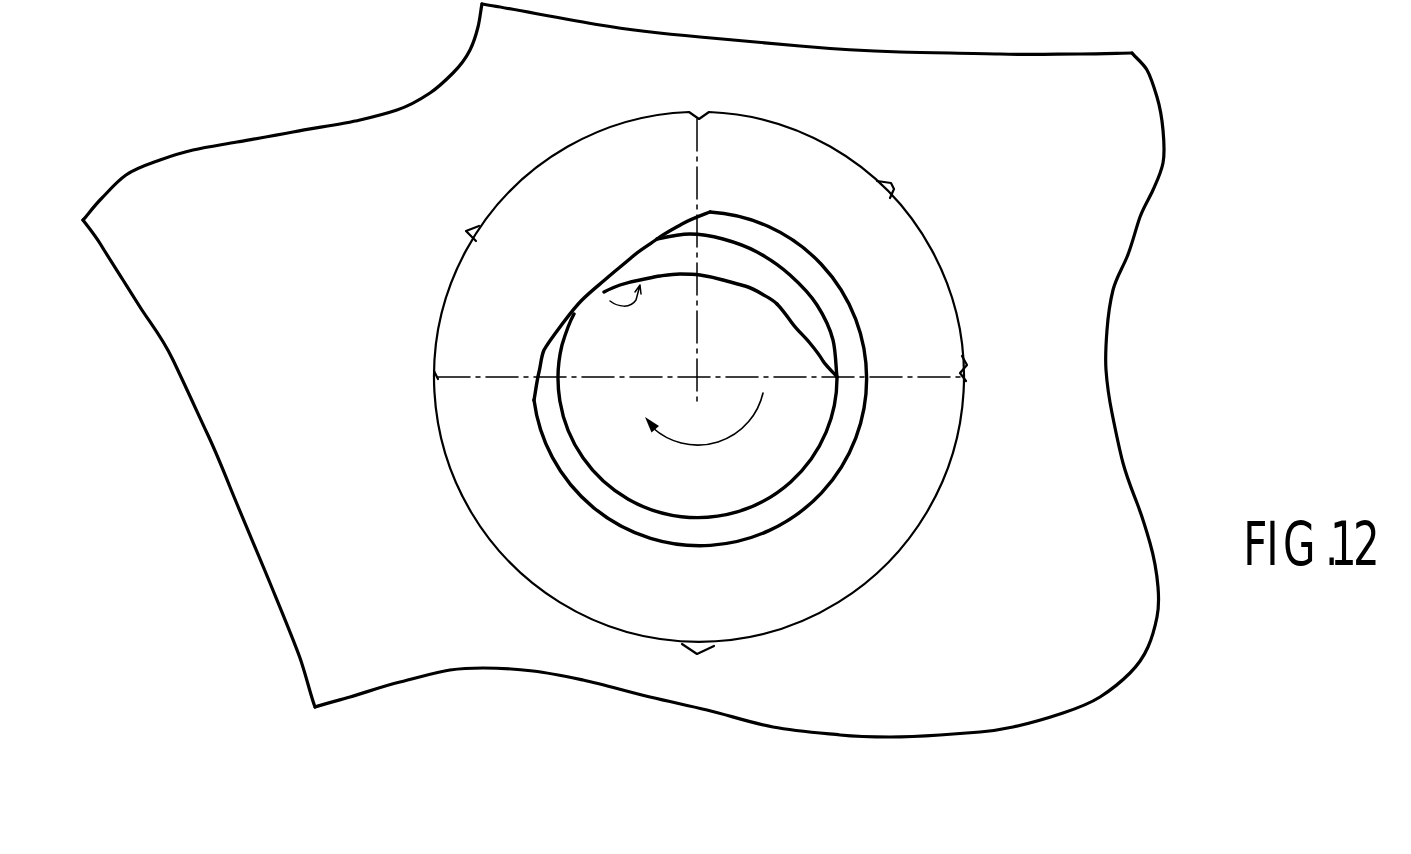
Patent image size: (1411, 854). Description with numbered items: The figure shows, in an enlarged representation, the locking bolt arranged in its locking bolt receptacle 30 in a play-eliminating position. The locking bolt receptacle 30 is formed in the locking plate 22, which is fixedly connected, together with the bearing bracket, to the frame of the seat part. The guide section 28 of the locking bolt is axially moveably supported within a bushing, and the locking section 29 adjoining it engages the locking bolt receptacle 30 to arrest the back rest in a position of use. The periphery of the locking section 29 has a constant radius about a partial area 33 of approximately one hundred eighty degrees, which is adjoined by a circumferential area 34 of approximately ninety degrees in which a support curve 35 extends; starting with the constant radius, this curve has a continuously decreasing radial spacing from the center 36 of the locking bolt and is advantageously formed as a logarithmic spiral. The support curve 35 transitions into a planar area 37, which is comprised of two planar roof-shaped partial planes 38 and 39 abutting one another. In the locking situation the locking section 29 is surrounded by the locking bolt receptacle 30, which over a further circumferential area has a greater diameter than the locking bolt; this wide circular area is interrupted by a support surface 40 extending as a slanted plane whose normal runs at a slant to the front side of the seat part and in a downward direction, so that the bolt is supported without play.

The locking plate 22 is at (1027, 661).
The guide section 28 is at (784, 252).
The locking section 29 is at (733, 501).
The locking bolt receptacle 30 is at (593, 521).
The partial area 33 is at (700, 400).
The circumferential area 34 is at (452, 225).
The support curve 35 is at (610, 301).
The center 36 is at (697, 377).
The planar area 37 is at (904, 175).
The partial plane 38 is at (722, 272).
The partial plane 39 is at (807, 314).
The support surface 40 is at (624, 259).